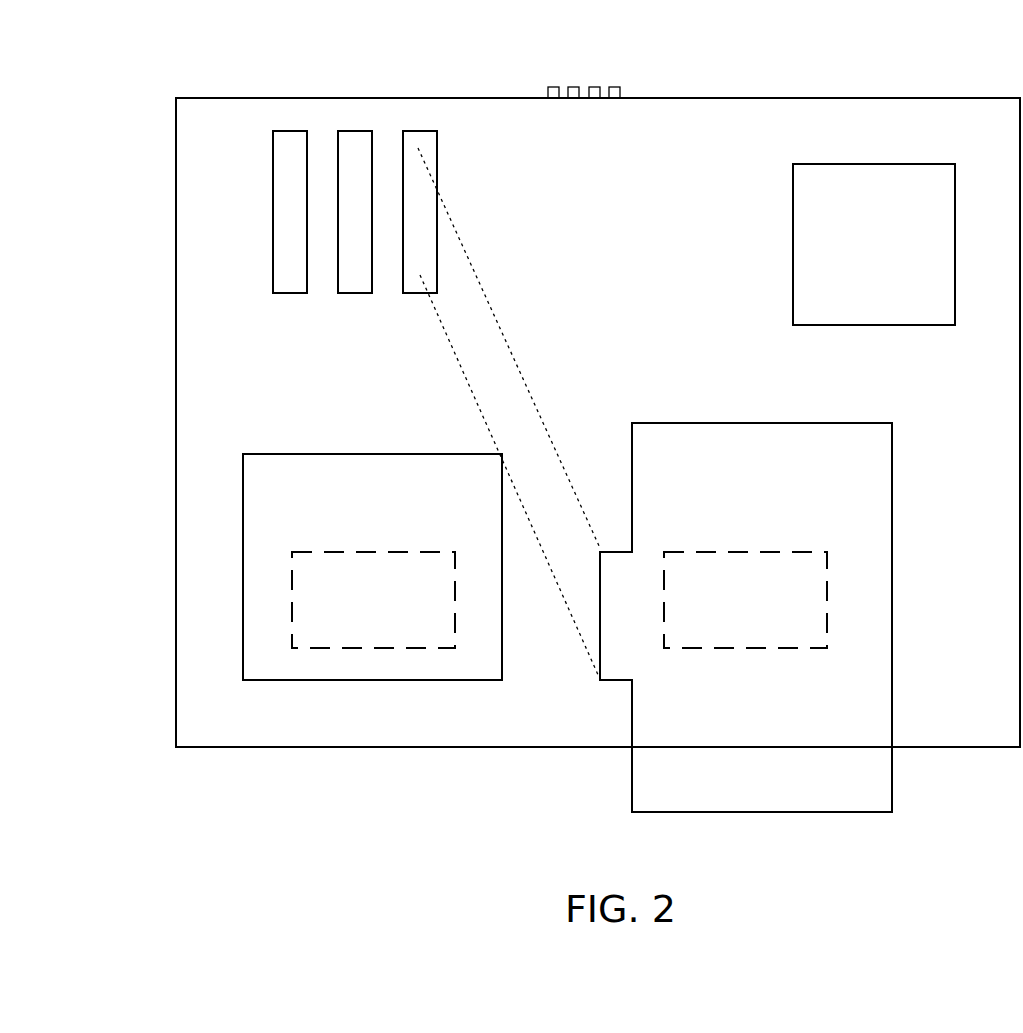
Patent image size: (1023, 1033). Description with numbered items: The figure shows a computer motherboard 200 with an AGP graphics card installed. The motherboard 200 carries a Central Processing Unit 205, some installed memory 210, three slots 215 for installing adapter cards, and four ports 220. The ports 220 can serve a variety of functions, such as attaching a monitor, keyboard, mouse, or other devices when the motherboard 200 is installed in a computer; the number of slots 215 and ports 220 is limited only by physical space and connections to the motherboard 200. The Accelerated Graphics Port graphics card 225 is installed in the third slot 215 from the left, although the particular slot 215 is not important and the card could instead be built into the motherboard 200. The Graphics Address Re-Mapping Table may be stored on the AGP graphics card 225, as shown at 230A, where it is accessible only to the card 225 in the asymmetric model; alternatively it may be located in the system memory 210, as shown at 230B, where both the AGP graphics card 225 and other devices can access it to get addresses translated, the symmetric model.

The computer motherboard 200 is at (290, 98).
The Central Processing Unit (CPU) 205 is at (793, 247).
The installed memory 210 is at (355, 454).
The slots 215 is at (413, 322).
The ports 220 is at (570, 68).
The Accelerated Graphics Port (AGP) graphics card 225 is at (745, 423).
The GART stored on the AGP graphics card 230A is at (777, 552).
The GART located in system memory 230B is at (347, 648).